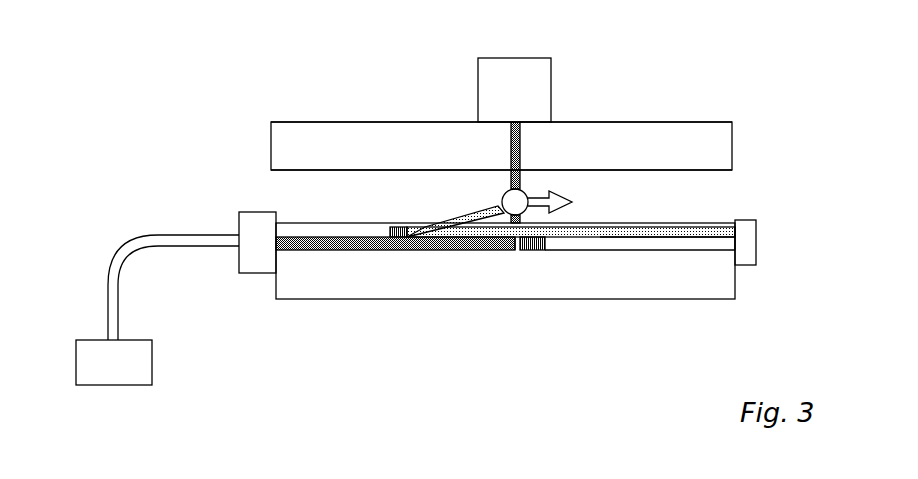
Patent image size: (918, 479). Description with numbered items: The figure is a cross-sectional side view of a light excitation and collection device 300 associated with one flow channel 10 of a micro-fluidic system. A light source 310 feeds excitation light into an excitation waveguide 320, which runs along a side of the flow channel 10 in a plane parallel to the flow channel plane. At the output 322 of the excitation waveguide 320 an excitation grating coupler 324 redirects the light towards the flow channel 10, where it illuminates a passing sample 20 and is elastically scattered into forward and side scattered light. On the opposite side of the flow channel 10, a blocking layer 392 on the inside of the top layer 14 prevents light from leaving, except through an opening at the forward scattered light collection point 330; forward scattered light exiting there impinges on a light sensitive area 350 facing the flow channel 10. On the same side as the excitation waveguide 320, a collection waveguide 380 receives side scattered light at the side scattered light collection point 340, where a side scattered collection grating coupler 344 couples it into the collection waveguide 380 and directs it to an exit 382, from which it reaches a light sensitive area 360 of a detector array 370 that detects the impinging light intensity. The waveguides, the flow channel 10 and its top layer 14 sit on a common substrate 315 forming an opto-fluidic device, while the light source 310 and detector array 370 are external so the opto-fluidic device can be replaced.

The light excitation and collection device 300 is at (202, 79).
The flow channel 10 is at (350, 183).
The top layer 14 is at (653, 137).
The sample 20 is at (505, 198).
The light sensitive area 350 is at (510, 127).
The forward scattered light collection point 330 is at (522, 168).
The blocking layer 392 is at (443, 172).
The detector array 370 is at (758, 240).
The light source 310 is at (92, 340).
The excitation waveguide 320 is at (317, 243).
The side scattered collection grating coupler 344 is at (398, 240).
The side scattered light collection point 340 is at (440, 237).
The output 322 is at (513, 250).
The excitation grating coupler 324 is at (507, 250).
The common substrate 315 is at (600, 282).
The collection waveguide 380 is at (655, 232).
The exit 382 is at (733, 233).
The light sensitive area 360 is at (745, 238).